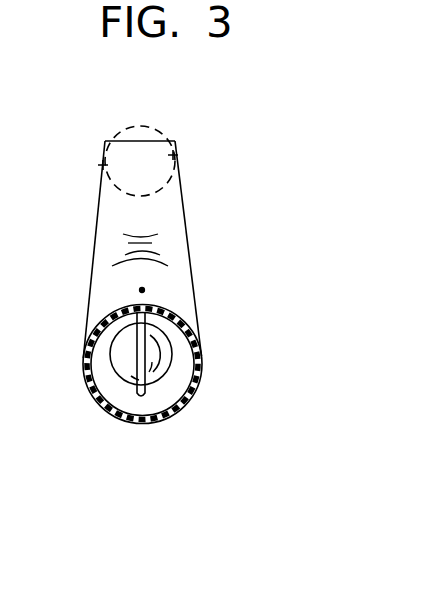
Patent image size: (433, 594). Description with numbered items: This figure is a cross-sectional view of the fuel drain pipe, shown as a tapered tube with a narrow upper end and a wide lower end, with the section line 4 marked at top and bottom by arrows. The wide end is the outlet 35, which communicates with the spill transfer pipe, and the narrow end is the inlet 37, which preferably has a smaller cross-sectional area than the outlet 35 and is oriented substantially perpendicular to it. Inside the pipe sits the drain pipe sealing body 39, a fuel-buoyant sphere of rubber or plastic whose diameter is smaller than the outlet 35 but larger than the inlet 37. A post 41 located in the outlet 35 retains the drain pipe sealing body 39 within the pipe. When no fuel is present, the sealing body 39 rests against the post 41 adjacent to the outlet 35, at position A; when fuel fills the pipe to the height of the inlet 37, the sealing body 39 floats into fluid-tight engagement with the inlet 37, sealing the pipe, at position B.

The outlet 35 is at (183, 372).
The inlet 37 is at (176, 140).
The drain pipe sealing body 39 is at (173, 153).
The post 41 is at (143, 397).
The section line 4- 4 is at (142, 110).
The position A is at (127, 362).
The position B is at (103, 165).